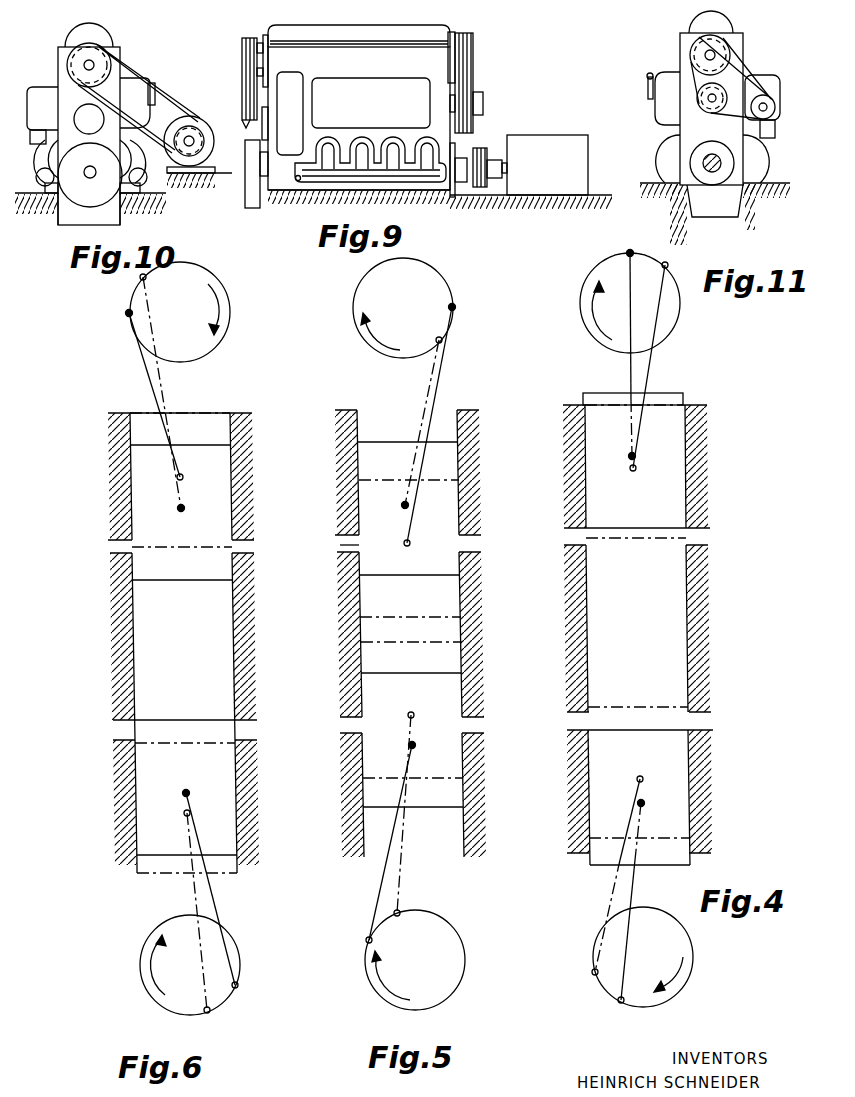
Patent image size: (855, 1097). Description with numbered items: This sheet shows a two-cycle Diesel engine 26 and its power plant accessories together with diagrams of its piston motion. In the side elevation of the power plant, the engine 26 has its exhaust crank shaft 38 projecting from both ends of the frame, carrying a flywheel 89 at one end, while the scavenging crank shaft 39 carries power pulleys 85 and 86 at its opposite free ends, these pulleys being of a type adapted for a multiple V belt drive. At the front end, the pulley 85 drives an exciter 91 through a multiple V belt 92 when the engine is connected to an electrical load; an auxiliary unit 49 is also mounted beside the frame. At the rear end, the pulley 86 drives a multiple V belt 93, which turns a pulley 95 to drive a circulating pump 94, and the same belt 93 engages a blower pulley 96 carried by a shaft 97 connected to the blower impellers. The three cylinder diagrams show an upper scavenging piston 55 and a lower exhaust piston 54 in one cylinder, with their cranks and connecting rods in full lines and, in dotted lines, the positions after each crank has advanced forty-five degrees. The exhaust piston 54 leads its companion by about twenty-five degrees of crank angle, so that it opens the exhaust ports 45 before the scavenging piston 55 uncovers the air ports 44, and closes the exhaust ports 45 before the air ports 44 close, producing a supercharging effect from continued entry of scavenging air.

In FIG. 10, the engine 26 is at (130, 92).
In FIG. 9, the engine 26 is at (378, 106).
In FIG. 11, the engine 26 is at (660, 112).
In FIG. 10, the exhaust crank shaft 38 is at (92, 178).
In FIG. 10, the scavenging crank shaft 39 is at (87, 62).
In FIG. 6, the scavenging air ports 44 is at (254, 546).
In FIG. 5, the scavenging air ports 44 is at (350, 544).
In FIG. 4, the scavenging air ports 44 is at (696, 541).
In FIG. 6, the exhaust ports 45 is at (258, 734).
In FIG. 5, the exhaust ports 45 is at (355, 727).
In FIG. 4, the exhaust ports 45 is at (700, 718).
In FIG. 10, the auxiliary unit 49 is at (38, 98).
In FIG. 11, the auxiliary unit 49 is at (776, 76).
In FIG. 6, the lower piston 54 is at (215, 783).
In FIG. 5, the lower piston 54 is at (380, 760).
In FIG. 4, the lower piston 54 is at (607, 781).
In FIG. 6, the upper piston 55 is at (215, 505).
In FIG. 5, the upper piston 55 is at (378, 503).
In FIG. 4, the upper piston 55 is at (625, 495).
In FIG. 10, the power pulley 85 is at (102, 58).
In FIG. 9, the power pulley 85 is at (241, 44).
In FIG. 9, the power pulley 86 is at (474, 53).
In FIG. 10, the flywheel 89 is at (90, 200).
In FIG. 9, the flywheel 89 is at (245, 200).
In FIG. 10, the exciter 91 is at (203, 130).
In FIG. 10, the multiple V belt 92 is at (160, 102).
In FIG. 9, the multiple V belt 92 is at (244, 97).
In FIG. 9, the multiple V belt 93 is at (478, 92).
In FIG. 11, the multiple V belt 93 is at (728, 44).
In FIG. 11, the circulating pump 94 is at (706, 110).
In FIG. 11, the pulley 95 is at (735, 100).
In FIG. 11, the blower pulley 96 is at (774, 109).
In FIG. 11, the shaft 97 is at (768, 103).